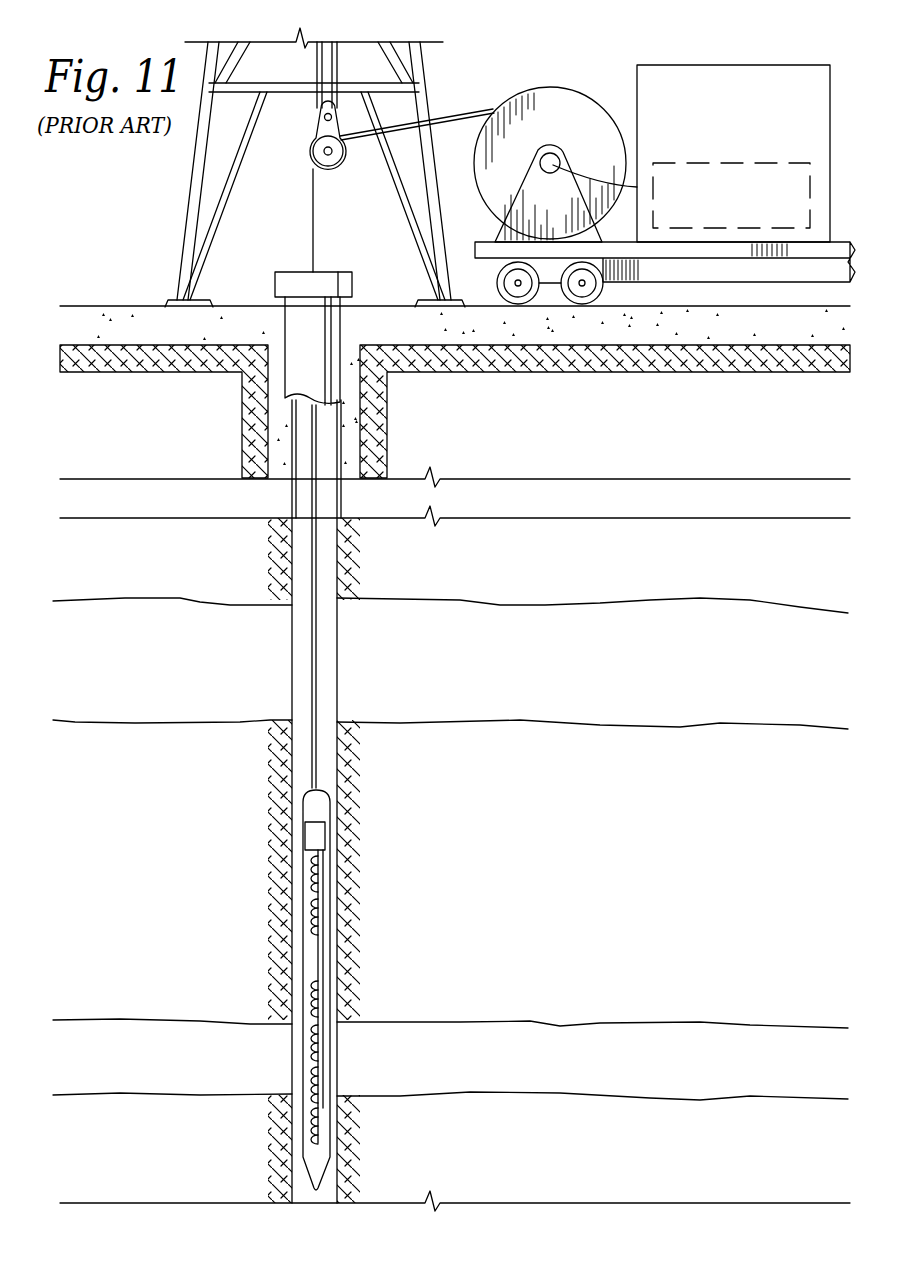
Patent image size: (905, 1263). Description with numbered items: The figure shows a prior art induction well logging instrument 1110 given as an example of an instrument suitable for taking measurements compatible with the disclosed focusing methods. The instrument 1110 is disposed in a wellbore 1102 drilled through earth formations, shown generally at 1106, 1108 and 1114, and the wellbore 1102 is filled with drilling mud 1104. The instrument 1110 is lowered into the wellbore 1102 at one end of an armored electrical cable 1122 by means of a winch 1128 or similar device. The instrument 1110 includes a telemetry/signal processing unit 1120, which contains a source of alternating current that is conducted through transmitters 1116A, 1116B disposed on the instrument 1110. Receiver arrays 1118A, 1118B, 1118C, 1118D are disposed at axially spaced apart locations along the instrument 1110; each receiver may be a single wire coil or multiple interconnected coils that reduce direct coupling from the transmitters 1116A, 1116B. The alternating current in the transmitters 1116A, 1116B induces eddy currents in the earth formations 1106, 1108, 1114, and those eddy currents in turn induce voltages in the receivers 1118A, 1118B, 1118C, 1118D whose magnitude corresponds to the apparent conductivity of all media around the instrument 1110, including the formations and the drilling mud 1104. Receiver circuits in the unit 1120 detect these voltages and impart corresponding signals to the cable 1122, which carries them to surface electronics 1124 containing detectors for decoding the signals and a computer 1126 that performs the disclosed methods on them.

The wellbore 1102 is at (310, 577).
The drilling mud 1104 is at (310, 643).
The earth formation 1106 is at (462, 570).
The earth formation 1108 is at (552, 615).
The induction well logging instrument 1110 is at (290, 834).
The earth formation 1114 is at (560, 1035).
The transmitter 1116A is at (308, 870).
The transmitter 1116B is at (308, 910).
The receiver array 1118A is at (310, 993).
The receiver array 1118B is at (310, 1042).
The receiver array 1118C is at (310, 1080).
The receiver array 1118D is at (310, 1122).
The telemetry/signal processing unit 1120 is at (306, 824).
The armored electrical cable 1122 is at (310, 548).
The surface electronics 1124 is at (723, 65).
The computer 1126 is at (705, 163).
The winch 1128 is at (548, 87).